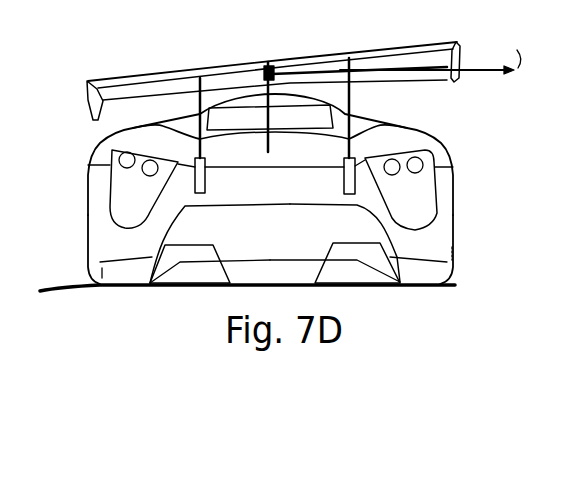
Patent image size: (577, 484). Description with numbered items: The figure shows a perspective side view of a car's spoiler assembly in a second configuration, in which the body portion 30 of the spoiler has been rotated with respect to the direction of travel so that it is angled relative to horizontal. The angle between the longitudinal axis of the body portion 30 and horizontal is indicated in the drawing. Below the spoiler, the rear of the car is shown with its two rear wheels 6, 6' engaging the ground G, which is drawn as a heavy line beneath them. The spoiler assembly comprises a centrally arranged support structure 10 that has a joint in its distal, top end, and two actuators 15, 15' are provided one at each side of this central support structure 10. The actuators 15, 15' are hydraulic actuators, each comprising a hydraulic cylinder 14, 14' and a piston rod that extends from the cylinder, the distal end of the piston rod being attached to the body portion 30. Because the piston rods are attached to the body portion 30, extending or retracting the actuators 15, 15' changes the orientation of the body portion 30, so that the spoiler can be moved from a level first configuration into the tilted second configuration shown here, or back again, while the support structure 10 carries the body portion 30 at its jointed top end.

The body portion 30 is at (133, 78).
The support structure 10 is at (268, 115).
The actuator 15 is at (161, 118).
The actuator 15' is at (393, 108).
The hydraulic cylinder 14 is at (230, 195).
The hydraulic cylinder 14' is at (311, 179).
The rear wheel 6 is at (181, 230).
The rear wheel 6' is at (395, 204).
The ground G is at (46, 284).